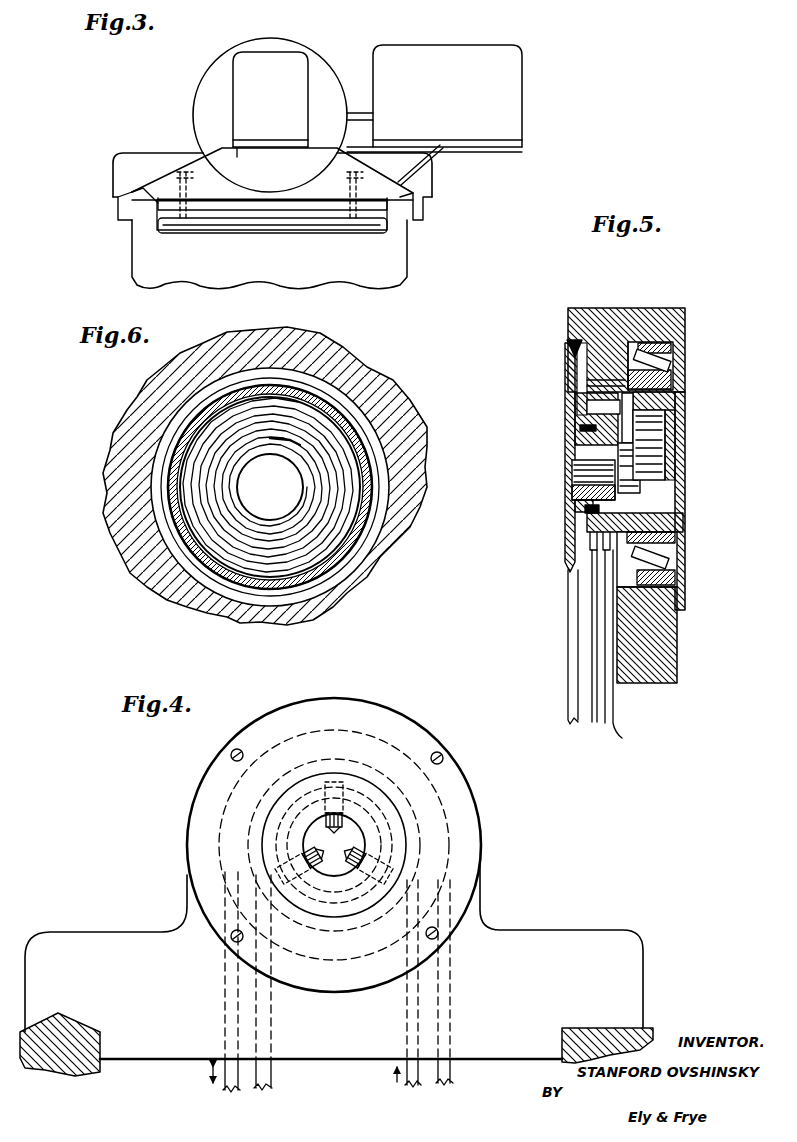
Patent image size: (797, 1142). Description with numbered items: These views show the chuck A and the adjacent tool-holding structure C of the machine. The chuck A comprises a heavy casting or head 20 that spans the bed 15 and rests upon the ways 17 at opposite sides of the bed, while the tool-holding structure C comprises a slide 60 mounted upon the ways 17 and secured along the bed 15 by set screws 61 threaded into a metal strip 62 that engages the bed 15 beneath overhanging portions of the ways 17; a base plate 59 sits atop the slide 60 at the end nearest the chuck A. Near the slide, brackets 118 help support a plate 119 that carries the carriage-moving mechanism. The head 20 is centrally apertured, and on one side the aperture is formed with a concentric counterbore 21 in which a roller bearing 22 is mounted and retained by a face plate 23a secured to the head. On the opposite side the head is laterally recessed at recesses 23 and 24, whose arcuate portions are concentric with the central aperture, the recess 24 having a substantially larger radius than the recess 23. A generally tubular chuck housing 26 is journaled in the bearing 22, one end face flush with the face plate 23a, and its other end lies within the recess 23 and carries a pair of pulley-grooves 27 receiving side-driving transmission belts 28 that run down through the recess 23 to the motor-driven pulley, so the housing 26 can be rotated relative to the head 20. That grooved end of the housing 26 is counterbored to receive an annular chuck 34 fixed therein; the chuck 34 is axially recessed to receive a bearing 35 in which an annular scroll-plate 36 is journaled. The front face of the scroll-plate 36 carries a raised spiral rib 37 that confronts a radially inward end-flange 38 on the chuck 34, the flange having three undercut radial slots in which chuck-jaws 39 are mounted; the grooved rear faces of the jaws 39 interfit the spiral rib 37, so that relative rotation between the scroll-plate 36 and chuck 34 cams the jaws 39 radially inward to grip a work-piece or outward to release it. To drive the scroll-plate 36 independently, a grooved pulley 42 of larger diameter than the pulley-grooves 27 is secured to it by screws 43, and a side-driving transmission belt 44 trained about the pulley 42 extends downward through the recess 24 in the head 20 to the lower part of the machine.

In FIG. 3, the bed 15 is at (135, 250).
In FIG. 3, the ways 17 is at (115, 195).
In FIG. 4, the ways 17 is at (95, 1027).
In FIG. 3, the head 20 is at (146, 143).
In FIG. 6, the head 20 is at (402, 420).
In FIG. 5, the head 20 is at (572, 313).
In FIG. 4, the head 20 is at (493, 933).
In FIG. 5, the counterbore 21 is at (633, 340).
In FIG. 5, the roller bearing 22 is at (672, 360).
In FIG. 5, the recess 23 is at (590, 377).
In FIG. 5, the face plate 23a is at (687, 587).
In FIG. 4, the face plate 23a is at (472, 812).
In FIG. 5, the recess 24 is at (572, 343).
In FIG. 6, the chuck housing 26 is at (307, 390).
In FIG. 5, the chuck housing 26 is at (670, 522).
In FIG. 5, the pulley-grooves 27 is at (603, 550).
In FIG. 5, the transmission belts 28 is at (605, 725).
In FIG. 4, the transmission belts 28 is at (273, 1080).
In FIG. 6, the annular chuck 34 is at (240, 400).
In FIG. 5, the annular chuck 34 is at (583, 522).
In FIG. 5, the bearing 35 is at (587, 505).
In FIG. 6, the scroll-plate 36 is at (320, 418).
In FIG. 5, the scroll-plate 36 is at (573, 480).
In FIG. 6, the spiral rib 37 is at (343, 507).
In FIG. 5, the end-flange 38 is at (642, 477).
In FIG. 5, the chuck-jaws 39 is at (637, 440).
In FIG. 4, the chuck-jaws 39 is at (322, 815).
In FIG. 5, the grooved pulley 42 is at (573, 385).
In FIG. 5, the screws 43 is at (572, 430).
In FIG. 5, the transmission belt 44 is at (578, 720).
In FIG. 4, the transmission belt 44 is at (450, 1079).
In FIG. 3, the base plate 59 is at (237, 148).
In FIG. 3, the slide 60 is at (252, 190).
In FIG. 3, the set screws 61 is at (188, 210).
In FIG. 3, the metal strip 62 is at (287, 222).
In FIG. 3, the brackets 118 is at (420, 170).
In FIG. 3, the plate 119 is at (517, 152).
In FIG. 3, the chuck A is at (188, 97).
In FIG. 5, the chuck A is at (668, 298).
In FIG. 4, the chuck A is at (190, 770).
In FIG. 3, the motor unit B is at (370, 60).
In FIG. 3, the tool-holding structure C is at (267, 47).